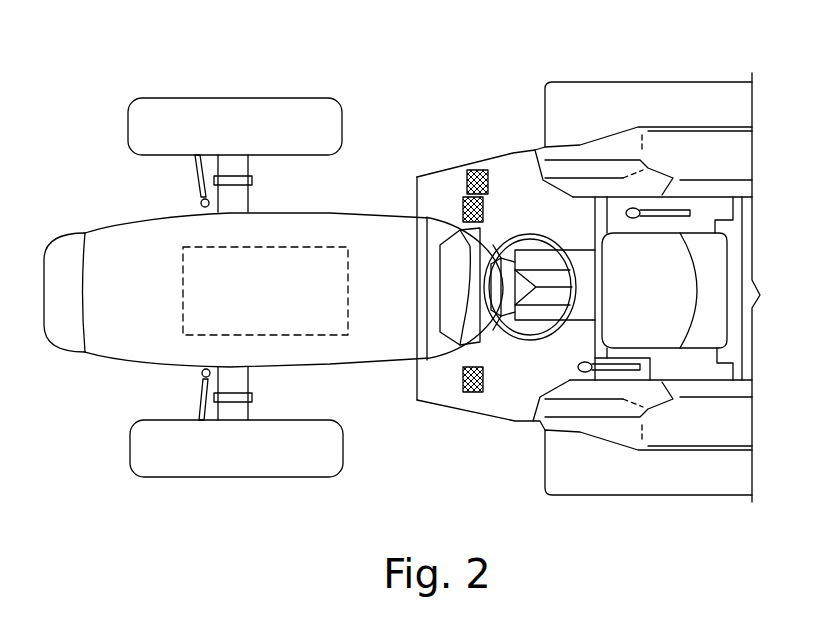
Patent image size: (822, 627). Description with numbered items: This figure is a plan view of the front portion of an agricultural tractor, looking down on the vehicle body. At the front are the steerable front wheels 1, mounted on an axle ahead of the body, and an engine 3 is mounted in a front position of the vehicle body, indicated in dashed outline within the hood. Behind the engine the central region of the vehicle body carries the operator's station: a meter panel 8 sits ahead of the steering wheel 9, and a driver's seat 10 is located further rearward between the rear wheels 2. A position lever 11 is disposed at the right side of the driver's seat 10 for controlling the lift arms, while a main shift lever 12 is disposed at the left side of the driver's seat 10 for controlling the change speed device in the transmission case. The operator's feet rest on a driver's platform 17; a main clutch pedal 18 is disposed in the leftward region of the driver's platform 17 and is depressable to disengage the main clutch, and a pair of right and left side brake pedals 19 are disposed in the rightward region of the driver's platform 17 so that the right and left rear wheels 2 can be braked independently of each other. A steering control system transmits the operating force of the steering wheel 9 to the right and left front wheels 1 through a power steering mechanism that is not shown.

The front wheels 1 is at (277, 98).
The rear wheels 2 is at (663, 82).
The engine 3 is at (183, 290).
The meter panel 8 is at (497, 340).
The steering wheel 9 is at (521, 237).
The driver's seat 10 is at (675, 350).
The position lever 11 is at (656, 221).
The main shift lever 12 is at (578, 367).
The driver's platform 17 is at (505, 165).
The main clutch pedal 18 is at (466, 393).
The side brake pedals 19 is at (465, 200).